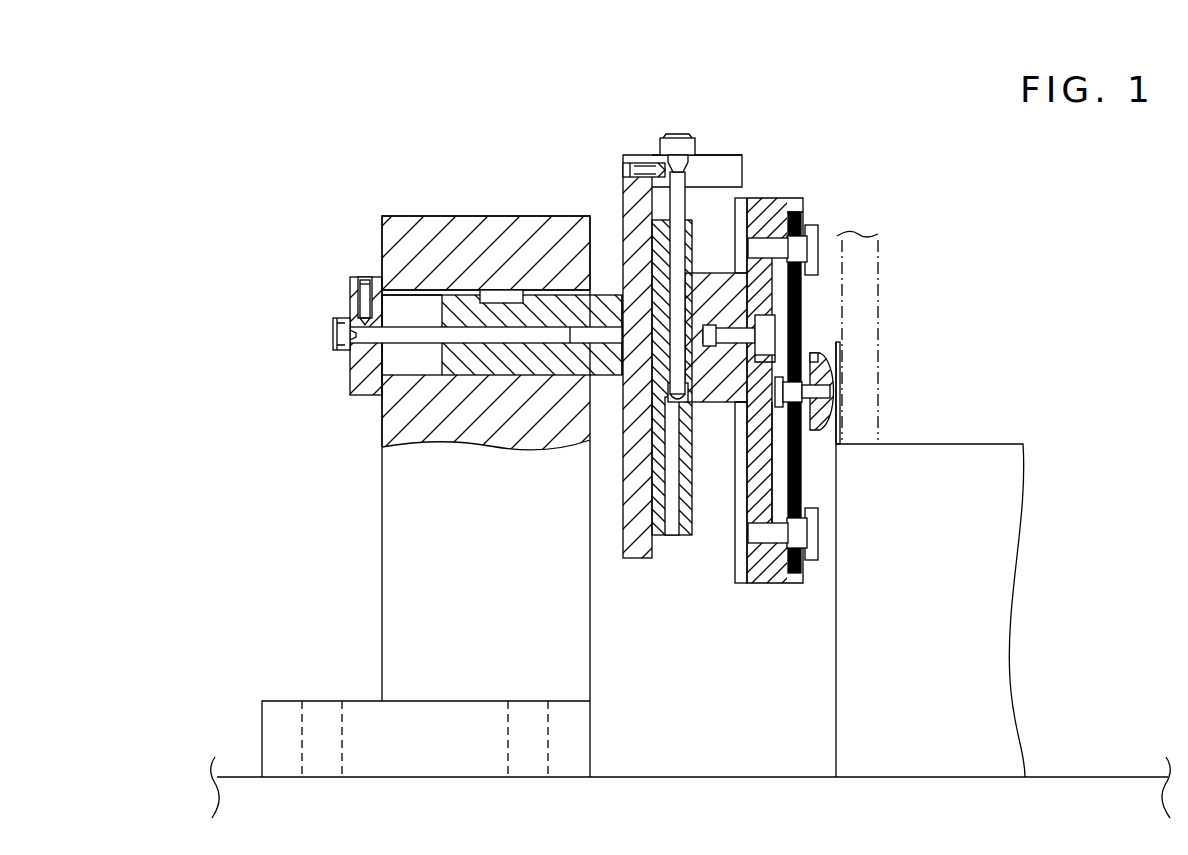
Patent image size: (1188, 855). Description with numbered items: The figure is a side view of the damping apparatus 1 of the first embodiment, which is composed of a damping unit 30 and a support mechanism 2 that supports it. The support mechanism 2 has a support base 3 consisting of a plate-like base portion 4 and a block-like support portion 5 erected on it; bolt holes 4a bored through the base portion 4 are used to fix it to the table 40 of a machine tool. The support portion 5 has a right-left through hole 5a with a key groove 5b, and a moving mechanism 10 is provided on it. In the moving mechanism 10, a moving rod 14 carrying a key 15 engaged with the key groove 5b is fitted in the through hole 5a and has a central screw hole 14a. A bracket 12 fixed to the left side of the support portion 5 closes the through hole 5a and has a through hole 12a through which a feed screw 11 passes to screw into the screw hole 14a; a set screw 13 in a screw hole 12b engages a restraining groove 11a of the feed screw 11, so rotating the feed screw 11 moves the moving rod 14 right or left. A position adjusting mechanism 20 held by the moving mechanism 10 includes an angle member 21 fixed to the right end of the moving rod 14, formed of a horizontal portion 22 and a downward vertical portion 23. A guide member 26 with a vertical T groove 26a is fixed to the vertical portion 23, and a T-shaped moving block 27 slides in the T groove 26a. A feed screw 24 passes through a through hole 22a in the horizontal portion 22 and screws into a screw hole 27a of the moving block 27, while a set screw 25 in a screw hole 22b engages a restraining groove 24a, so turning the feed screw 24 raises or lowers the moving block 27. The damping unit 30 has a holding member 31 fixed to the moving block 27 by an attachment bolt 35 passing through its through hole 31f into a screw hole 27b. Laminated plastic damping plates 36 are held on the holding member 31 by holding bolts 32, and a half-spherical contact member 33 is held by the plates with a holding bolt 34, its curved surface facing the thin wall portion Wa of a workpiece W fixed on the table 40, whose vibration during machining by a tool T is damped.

The damping apparatus 1 is at (230, 194).
The support mechanism 2 is at (455, 142).
The support base 3 is at (340, 517).
The base portion 4 is at (435, 770).
The bolt holes 4a is at (304, 726).
The support portion 5 is at (392, 590).
The through hole 5a is at (383, 402).
The key groove 5b is at (400, 300).
The moving mechanism 10 is at (270, 338).
The feed screw 11 is at (335, 341).
The restraining groove 11a is at (352, 351).
The bracket 12 is at (352, 386).
The through hole 12a is at (346, 328).
The screw hole 12b is at (365, 306).
The set screw 13 is at (356, 306).
The moving rod 14 is at (563, 300).
The screw hole 14a is at (612, 340).
The key 15 is at (500, 290).
The position adjusting mechanism 20 is at (650, 130).
The angle member 21 is at (687, 382).
The horizontal portion 22 is at (730, 160).
The through hole 22a is at (690, 150).
The screw hole 22b is at (625, 166).
The vertical portion 23 is at (636, 552).
The feed screw 24 is at (680, 138).
The restraining groove 24a is at (690, 172).
The set screw 25 is at (640, 164).
The guide member 26 is at (687, 535).
The T groove 26a is at (672, 537).
The moving block 27 is at (705, 286).
The screw hole 27a is at (688, 402).
The screw hole 27b is at (775, 331).
The damping unit 30 is at (836, 184).
The holding member 31 is at (772, 200).
The through hole 31f is at (770, 354).
The holding bolts 32 is at (816, 238).
The contact member 33 is at (838, 394).
The holding bolt 34 is at (772, 446).
The attachment bolt 35 is at (746, 403).
The damping plates 36 is at (801, 300).
The table 40 is at (1107, 770).
The workpiece W is at (1018, 507).
The thin wall portion Wa is at (841, 423).
The tool T is at (878, 248).